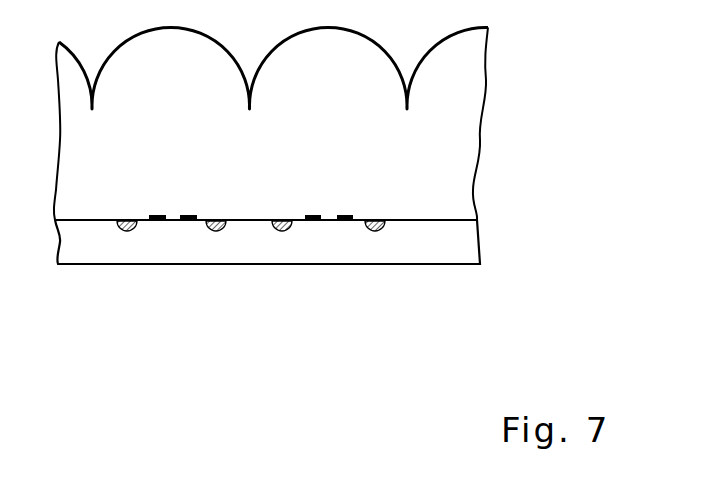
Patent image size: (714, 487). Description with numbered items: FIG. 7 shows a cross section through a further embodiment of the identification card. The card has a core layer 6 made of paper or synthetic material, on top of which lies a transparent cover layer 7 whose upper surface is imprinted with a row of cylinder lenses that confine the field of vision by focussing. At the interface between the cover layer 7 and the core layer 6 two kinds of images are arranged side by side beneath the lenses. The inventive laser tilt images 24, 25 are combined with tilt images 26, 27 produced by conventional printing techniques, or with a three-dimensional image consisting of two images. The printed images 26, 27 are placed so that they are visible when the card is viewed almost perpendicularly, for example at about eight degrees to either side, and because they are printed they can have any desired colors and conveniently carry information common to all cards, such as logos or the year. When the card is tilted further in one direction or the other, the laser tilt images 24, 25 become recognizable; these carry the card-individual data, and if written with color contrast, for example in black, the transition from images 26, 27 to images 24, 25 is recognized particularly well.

The transparent cover layer 7 is at (316, 123).
The core layer 6 is at (316, 218).
The laser tilt image 24 is at (99, 273).
The laser tilt image 25 is at (295, 273).
The printed tilt image 26 is at (200, 303).
The printed tilt image 27 is at (266, 303).